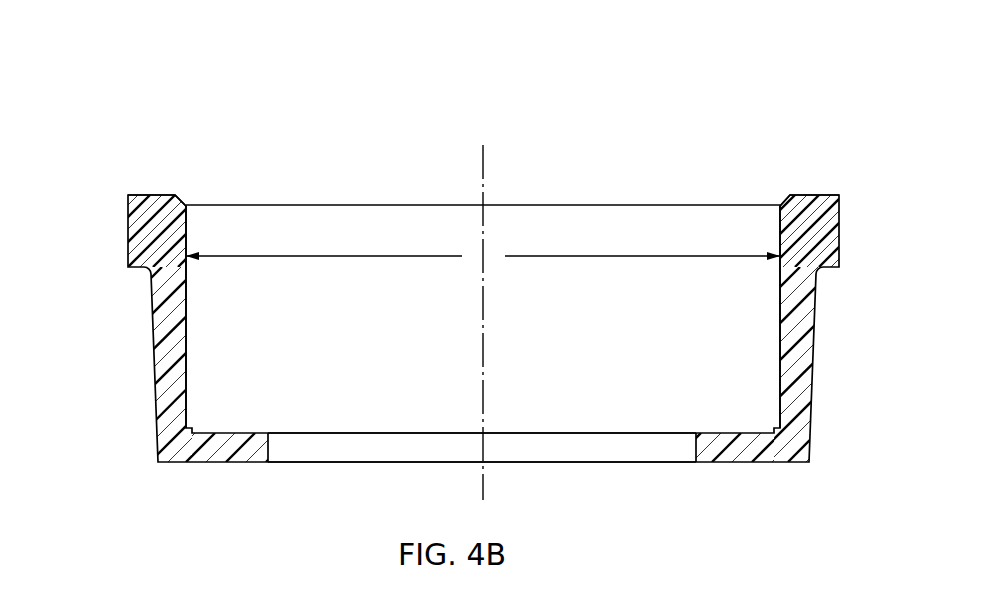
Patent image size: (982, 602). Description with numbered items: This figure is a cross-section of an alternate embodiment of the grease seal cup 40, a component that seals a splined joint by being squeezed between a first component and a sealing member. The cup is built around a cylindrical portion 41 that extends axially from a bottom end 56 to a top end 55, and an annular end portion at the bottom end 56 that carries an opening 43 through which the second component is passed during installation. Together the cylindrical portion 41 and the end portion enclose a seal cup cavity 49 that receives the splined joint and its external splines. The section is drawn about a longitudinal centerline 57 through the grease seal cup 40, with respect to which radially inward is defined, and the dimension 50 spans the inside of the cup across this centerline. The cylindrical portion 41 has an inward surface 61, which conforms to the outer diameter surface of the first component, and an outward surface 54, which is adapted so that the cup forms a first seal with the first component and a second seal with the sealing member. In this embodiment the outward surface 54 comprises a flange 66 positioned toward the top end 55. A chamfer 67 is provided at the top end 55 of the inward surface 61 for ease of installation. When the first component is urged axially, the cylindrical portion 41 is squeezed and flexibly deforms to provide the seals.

The grease seal cup 40 is at (718, 118).
The cylindrical portion 41 is at (808, 374).
The opening 43 is at (577, 455).
The seal cup cavity 49 is at (452, 321).
The inner diameter dimension 50 is at (483, 257).
The outward surface 54 is at (155, 338).
The top end 55 is at (150, 195).
The bottom end 56 is at (217, 462).
The longitudinal centerline 57 is at (481, 352).
The inward surface 61 is at (188, 290).
The flange 66 is at (132, 221).
The chamfer 67 is at (784, 197).